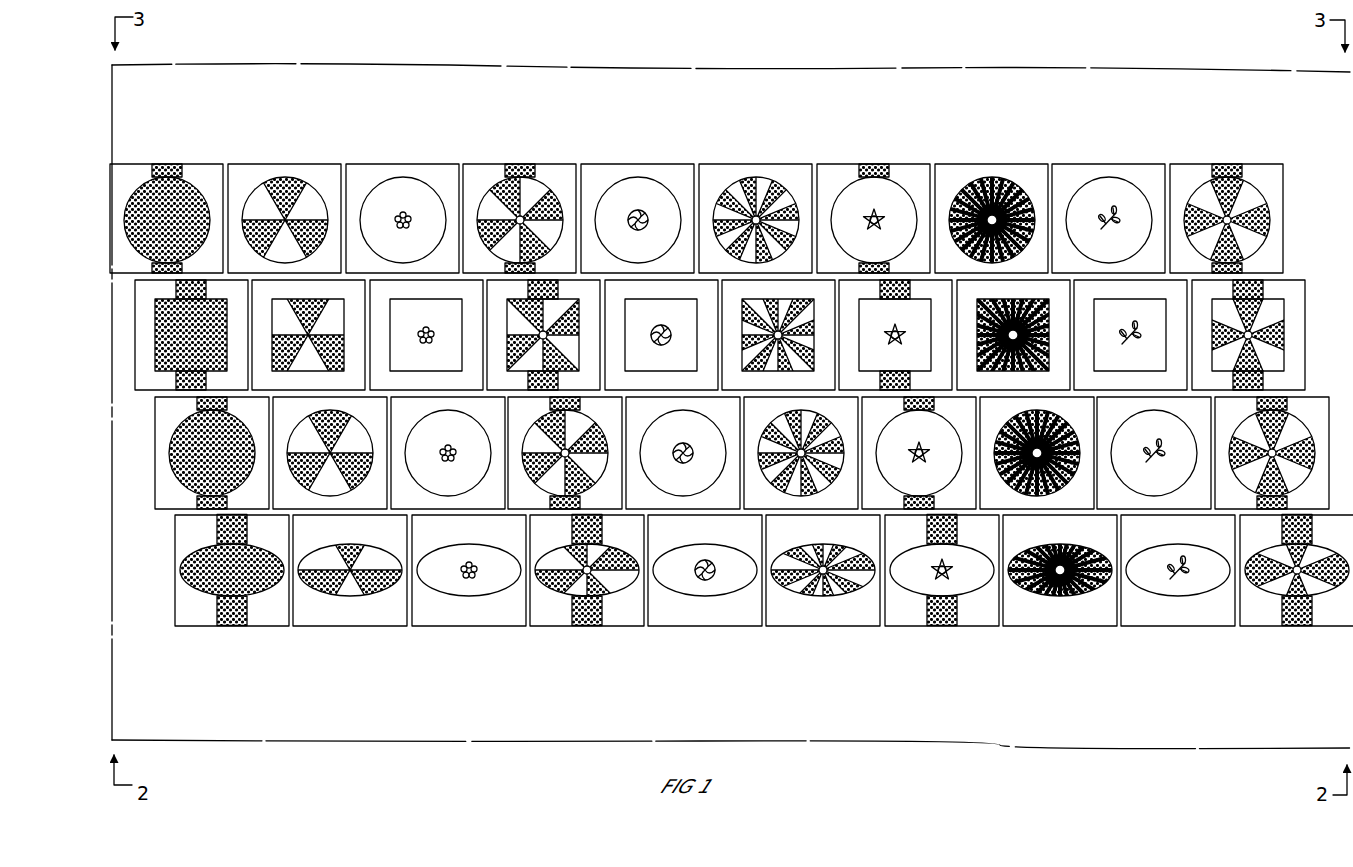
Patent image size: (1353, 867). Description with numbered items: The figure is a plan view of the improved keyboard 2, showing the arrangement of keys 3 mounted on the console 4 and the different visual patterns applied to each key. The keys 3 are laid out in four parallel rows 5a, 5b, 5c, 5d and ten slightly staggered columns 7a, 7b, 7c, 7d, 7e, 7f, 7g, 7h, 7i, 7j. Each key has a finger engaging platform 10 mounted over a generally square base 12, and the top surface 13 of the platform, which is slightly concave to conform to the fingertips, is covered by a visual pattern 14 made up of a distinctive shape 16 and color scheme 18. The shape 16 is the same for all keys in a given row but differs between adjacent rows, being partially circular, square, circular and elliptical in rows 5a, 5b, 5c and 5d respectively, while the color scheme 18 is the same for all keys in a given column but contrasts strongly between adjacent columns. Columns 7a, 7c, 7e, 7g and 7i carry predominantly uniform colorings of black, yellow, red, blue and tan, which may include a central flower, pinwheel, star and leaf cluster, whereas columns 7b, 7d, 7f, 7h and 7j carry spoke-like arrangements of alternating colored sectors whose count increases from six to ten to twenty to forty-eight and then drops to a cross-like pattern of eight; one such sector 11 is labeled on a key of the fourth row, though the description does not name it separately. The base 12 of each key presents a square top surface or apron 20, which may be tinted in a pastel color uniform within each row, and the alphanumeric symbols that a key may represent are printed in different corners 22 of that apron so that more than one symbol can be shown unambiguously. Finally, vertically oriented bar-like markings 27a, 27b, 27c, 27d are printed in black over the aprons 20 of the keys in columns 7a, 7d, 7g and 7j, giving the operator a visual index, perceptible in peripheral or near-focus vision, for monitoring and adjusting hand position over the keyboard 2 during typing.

The keyboard 2 is at (212, 55).
The keys 3 is at (222, 145).
The console 4 is at (1297, 122).
The row 5a is at (1290, 215).
The row 5b is at (1313, 340).
The row 5c is at (150, 464).
The row 5d is at (170, 574).
The column 7a is at (235, 634).
The column 7b is at (353, 683).
The column 7c is at (472, 637).
The column 7d is at (610, 636).
The column 7e is at (722, 636).
The column 7f is at (848, 636).
The column 7g is at (958, 636).
The column 7h is at (1077, 636).
The column 7i is at (1193, 636).
The column 7j is at (1307, 636).
The finger engaging platform 10 is at (333, 595).
The key indicia sector 11 is at (349, 532).
The base 12 is at (373, 605).
The top surface 13 is at (321, 557).
The visual pattern 14 is at (391, 576).
The shape 16 is at (348, 592).
The color scheme 18 is at (357, 592).
The apron 20 is at (397, 608).
The corner 22 is at (300, 612).
The bar-like marking 27a is at (177, 163).
The bar-like marking 27b is at (527, 163).
The bar-like marking 27c is at (872, 163).
The bar-like marking 27d is at (1222, 165).